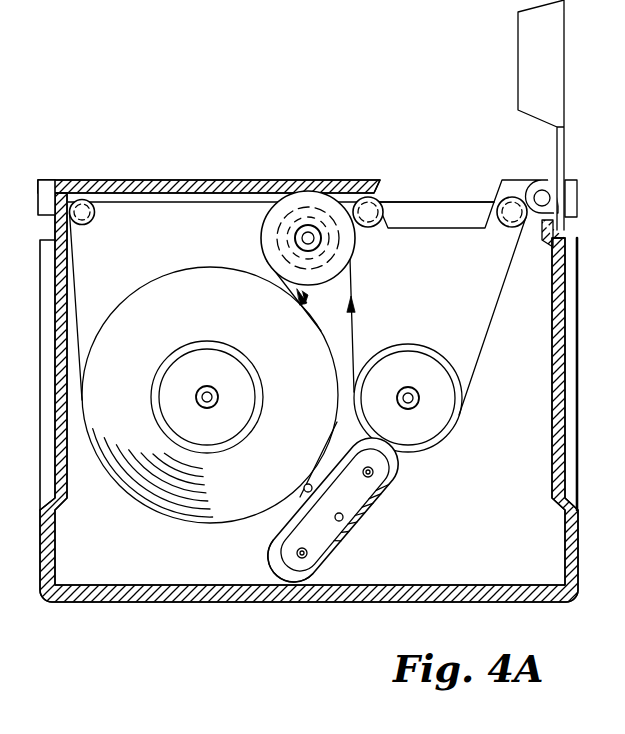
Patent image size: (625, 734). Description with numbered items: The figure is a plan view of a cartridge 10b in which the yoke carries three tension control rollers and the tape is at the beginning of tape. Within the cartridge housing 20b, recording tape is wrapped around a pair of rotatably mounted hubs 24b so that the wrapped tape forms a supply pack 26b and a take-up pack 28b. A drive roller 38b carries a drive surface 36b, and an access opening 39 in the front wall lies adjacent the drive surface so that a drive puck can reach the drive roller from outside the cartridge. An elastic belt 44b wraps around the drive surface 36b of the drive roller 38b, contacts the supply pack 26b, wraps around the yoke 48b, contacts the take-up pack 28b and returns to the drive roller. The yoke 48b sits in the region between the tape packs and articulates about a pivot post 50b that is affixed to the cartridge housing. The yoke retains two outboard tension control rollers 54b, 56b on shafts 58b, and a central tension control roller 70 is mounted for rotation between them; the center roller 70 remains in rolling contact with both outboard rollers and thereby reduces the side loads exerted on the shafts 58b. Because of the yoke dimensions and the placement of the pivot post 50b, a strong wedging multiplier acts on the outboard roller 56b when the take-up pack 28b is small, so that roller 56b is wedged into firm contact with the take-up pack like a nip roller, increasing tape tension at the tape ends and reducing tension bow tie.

The cartridge 10b is at (193, 134).
The cartridge housing 20b is at (212, 578).
The access opening 39 is at (270, 207).
The drive surface 36b is at (274, 248).
The drive roller 38b is at (348, 246).
The elastic belt 44b is at (354, 310).
The supply pack 26b is at (150, 300).
The hub 24b is at (228, 430).
The take-up pack 28b is at (449, 433).
The yoke 48b is at (296, 537).
The pivot post 50b is at (304, 487).
The outboard tension control roller 54b is at (280, 575).
The outboard tension control roller 56b is at (387, 494).
The shafts 58b is at (374, 474).
The central tension control roller 70 is at (358, 530).